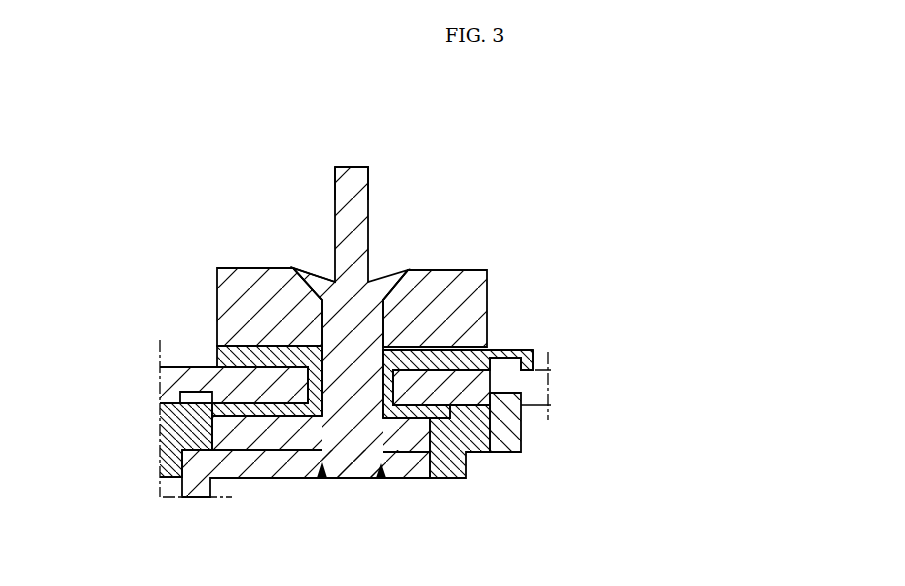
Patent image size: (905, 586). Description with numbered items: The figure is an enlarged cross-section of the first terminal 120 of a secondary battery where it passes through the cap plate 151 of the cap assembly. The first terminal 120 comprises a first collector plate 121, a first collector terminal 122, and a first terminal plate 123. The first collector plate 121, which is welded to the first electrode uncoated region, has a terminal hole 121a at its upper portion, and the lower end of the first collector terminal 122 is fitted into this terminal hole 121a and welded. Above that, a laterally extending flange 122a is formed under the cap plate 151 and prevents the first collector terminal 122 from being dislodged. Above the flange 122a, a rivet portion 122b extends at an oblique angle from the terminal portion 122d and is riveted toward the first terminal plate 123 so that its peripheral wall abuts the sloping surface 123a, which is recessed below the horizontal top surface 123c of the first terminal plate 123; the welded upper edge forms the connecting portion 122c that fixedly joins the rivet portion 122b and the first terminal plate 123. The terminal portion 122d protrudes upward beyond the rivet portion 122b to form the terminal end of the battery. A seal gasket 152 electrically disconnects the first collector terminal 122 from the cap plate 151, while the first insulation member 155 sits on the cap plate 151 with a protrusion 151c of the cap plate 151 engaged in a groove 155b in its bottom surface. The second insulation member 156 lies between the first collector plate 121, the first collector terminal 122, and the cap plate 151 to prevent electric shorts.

The first terminal 120 is at (351, 160).
The first collector plate 121 is at (172, 492).
The terminal hole 121a is at (328, 463).
The first collector terminal 122 is at (357, 450).
The flange 122a is at (248, 433).
The rivet portion 122b is at (317, 288).
The connecting portion 122c is at (293, 262).
The terminal portion 122d is at (362, 187).
The first terminal plate 123 is at (480, 297).
The sloping surface 123a is at (403, 286).
The horizontal top surface 123c is at (465, 268).
The cap plate 151 is at (167, 380).
The protrusion 151c is at (517, 349).
The seal gasket 152 is at (390, 380).
The first insulation member 155 is at (217, 355).
The groove 155b is at (511, 363).
The second insulation member 156 is at (513, 438).